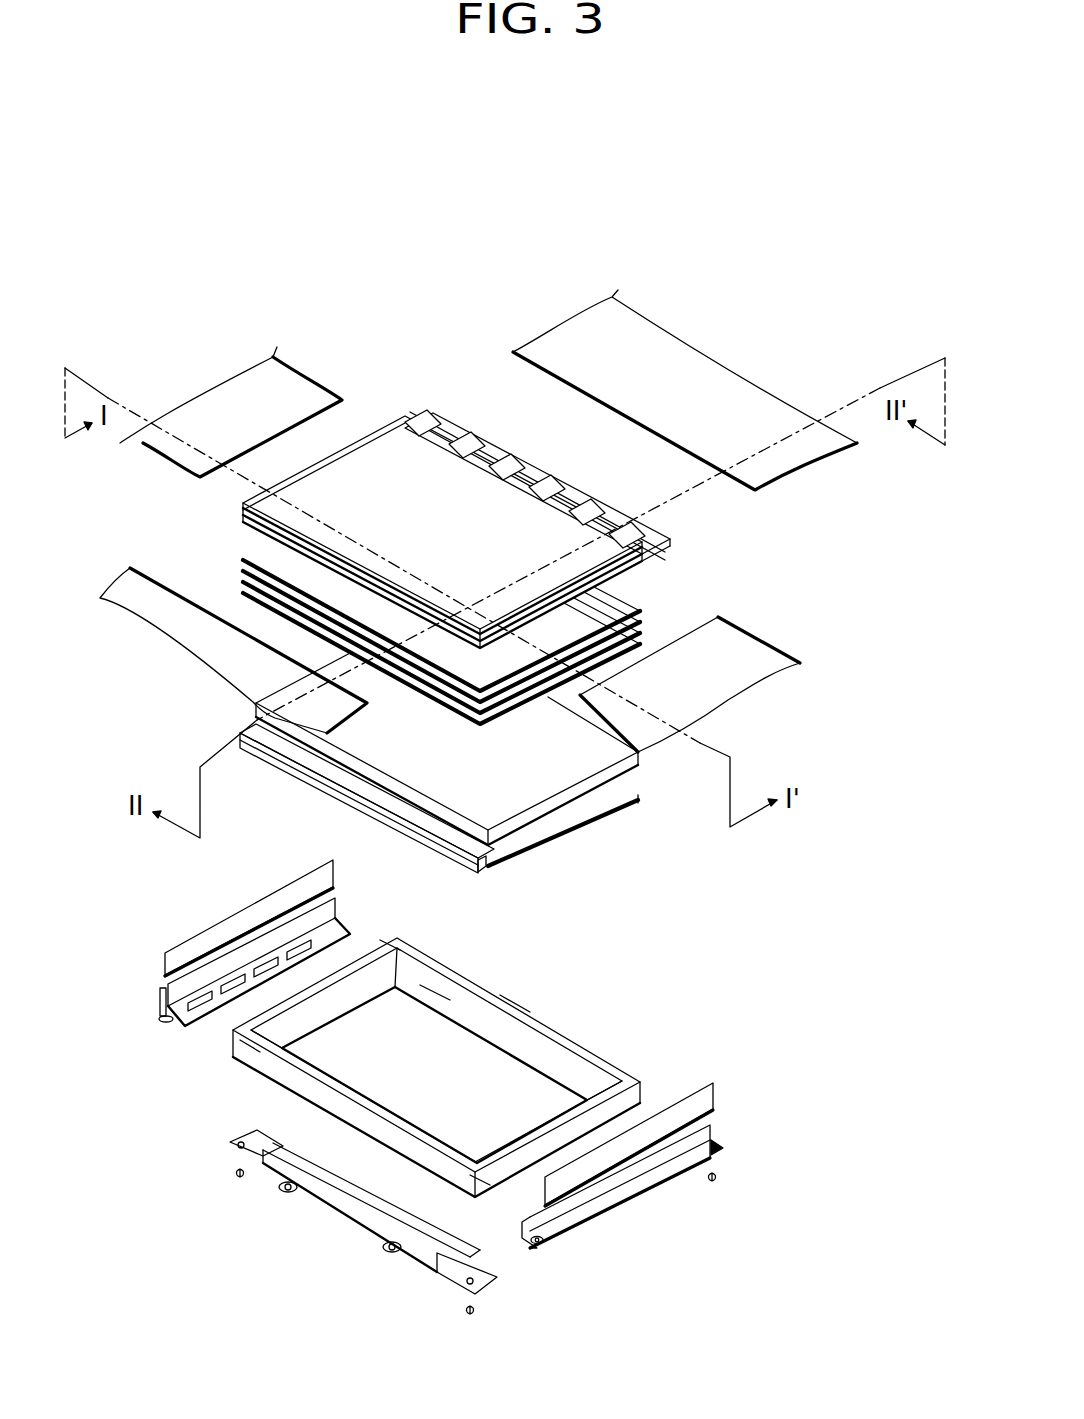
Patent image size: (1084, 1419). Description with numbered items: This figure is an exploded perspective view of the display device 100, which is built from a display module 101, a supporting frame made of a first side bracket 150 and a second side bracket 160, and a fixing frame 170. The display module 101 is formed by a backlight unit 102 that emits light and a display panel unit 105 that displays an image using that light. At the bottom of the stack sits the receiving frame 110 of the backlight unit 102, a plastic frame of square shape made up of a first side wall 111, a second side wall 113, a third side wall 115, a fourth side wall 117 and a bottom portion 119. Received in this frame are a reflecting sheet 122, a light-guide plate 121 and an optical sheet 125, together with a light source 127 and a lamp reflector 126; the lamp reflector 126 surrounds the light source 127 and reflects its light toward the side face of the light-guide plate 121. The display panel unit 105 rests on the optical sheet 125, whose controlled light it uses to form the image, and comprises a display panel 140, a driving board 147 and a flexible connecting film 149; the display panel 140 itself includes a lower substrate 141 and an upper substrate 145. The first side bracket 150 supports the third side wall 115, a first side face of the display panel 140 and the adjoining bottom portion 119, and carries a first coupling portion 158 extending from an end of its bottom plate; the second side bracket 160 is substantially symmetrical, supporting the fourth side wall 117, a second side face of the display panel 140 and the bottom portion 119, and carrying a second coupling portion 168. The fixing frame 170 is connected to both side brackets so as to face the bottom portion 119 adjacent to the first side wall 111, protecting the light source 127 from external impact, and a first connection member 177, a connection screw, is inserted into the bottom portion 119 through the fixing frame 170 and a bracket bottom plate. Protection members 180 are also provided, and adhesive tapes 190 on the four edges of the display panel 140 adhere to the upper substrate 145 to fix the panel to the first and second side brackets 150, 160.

The display device 100 is at (440, 243).
The display module 101 is at (846, 506).
The backlight unit 102 is at (473, 952).
The display panel unit 105 is at (545, 529).
The receiving frame 110 is at (446, 1065).
The first side wall 111 is at (257, 1058).
The second side wall 113 is at (517, 1003).
The third side wall 115 is at (388, 943).
The fourth side wall 117 is at (483, 1180).
The bottom portion 119 is at (437, 990).
The light-guide plate 121 is at (585, 787).
The reflecting sheet 122 is at (587, 826).
The optical sheet 125 is at (242, 555).
The lamp reflector 126 is at (362, 807).
The light source 127 is at (485, 872).
The display panel 140 is at (520, 529).
The lower substrate 141 is at (622, 562).
The upper substrate 145 is at (662, 545).
The driving board 147 is at (660, 527).
The flexible connecting film 149 is at (553, 487).
The first side bracket 150 is at (205, 997).
The first coupling portion 158 is at (163, 1017).
The second side bracket 160 is at (616, 1229).
The second coupling portion 168 is at (540, 1247).
The fixing frame 170 is at (352, 1210).
The first connection member 177 is at (236, 1174).
The protection members 180 is at (241, 907).
The adhesive tapes 190 is at (203, 402).